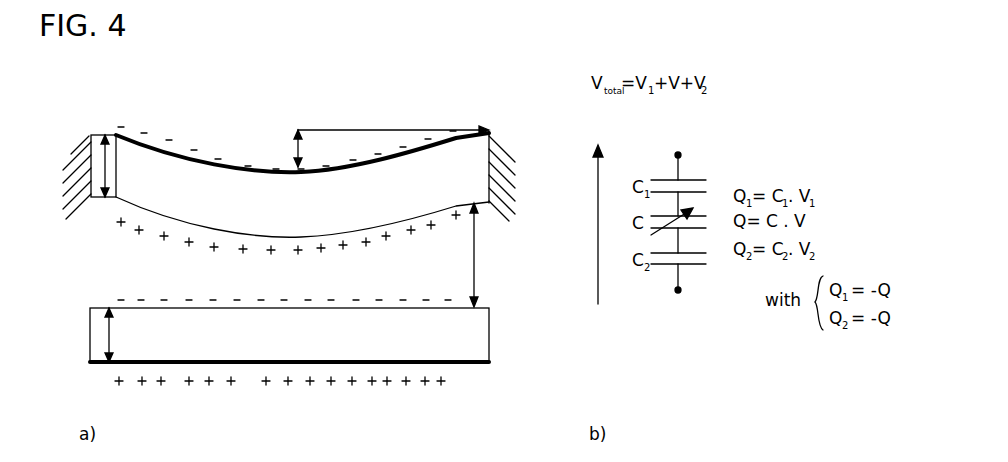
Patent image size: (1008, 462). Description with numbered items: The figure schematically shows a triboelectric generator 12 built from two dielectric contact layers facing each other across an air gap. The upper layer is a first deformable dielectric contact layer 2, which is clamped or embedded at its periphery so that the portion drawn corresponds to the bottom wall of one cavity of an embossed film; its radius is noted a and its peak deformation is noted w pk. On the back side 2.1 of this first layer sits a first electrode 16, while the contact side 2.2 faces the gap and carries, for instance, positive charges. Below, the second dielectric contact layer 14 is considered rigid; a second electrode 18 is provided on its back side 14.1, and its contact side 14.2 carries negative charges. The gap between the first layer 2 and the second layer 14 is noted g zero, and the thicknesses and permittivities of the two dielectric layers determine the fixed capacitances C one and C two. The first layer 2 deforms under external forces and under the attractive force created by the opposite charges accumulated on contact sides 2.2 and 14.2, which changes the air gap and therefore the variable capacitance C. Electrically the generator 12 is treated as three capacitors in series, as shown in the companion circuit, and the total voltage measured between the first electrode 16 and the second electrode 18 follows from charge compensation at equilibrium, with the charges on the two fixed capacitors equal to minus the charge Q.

The triboelectric generator 12 is at (97, 97).
The first electrode 16 is at (130, 137).
The first deformable dielectric contact layer 2 is at (187, 170).
The back side of the first contact layer 2.1 is at (246, 163).
The contact side of the first layer 2.2 is at (442, 204).
The second dielectric contact layer 14 is at (237, 347).
The back side of the second contact layer 14.1 is at (195, 362).
The contact side of the second layer 14.2 is at (152, 305).
The second electrode 18 is at (160, 362).